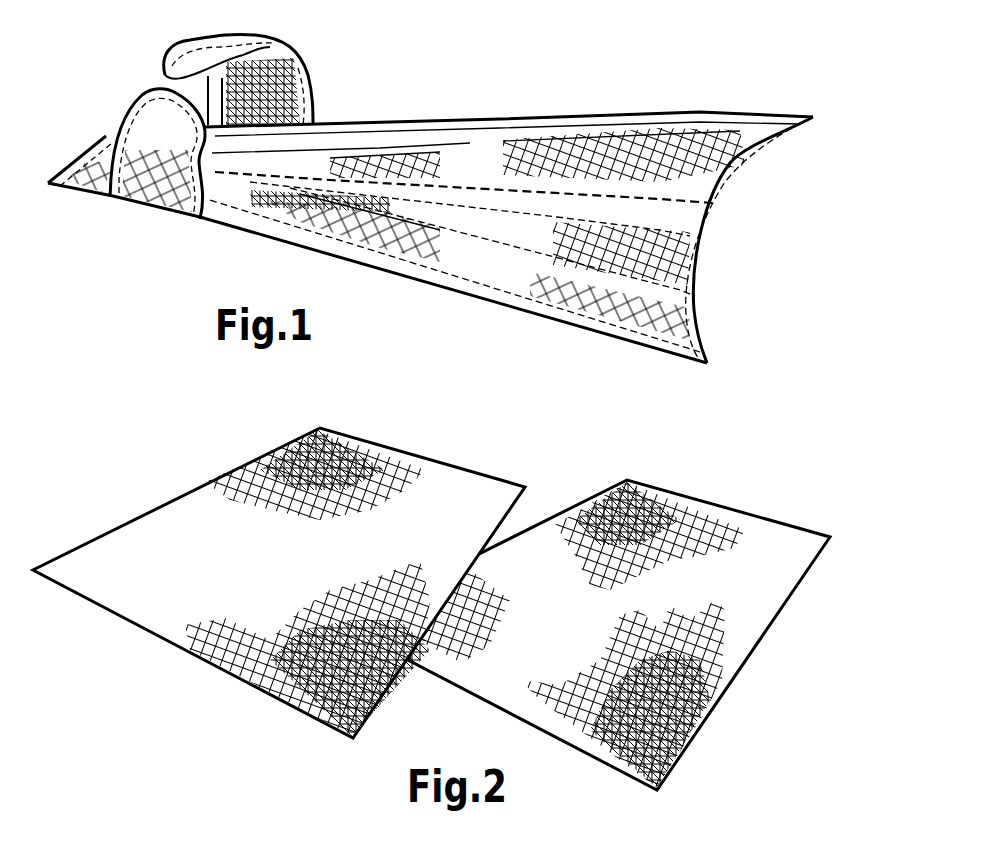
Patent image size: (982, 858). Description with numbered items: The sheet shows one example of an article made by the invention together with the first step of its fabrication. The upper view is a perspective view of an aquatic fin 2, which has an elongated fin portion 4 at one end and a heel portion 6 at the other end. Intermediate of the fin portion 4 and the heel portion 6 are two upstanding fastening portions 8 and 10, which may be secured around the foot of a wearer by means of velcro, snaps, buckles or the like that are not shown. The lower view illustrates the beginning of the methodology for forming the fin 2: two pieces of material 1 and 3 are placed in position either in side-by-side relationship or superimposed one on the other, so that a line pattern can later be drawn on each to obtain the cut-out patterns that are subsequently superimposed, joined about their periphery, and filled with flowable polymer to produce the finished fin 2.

In FIG. 2, the piece of material 1 is at (270, 581).
In FIG. 1, the aquatic fin 2 is at (672, 105).
In FIG. 2, the piece of material 3 is at (706, 601).
In FIG. 1, the fin portion 4 is at (550, 320).
In FIG. 1, the heel portion 6 is at (97, 140).
In FIG. 1, the upstanding fastening portion 8 is at (161, 135).
In FIG. 1, the upstanding fastening portion 10 is at (186, 50).